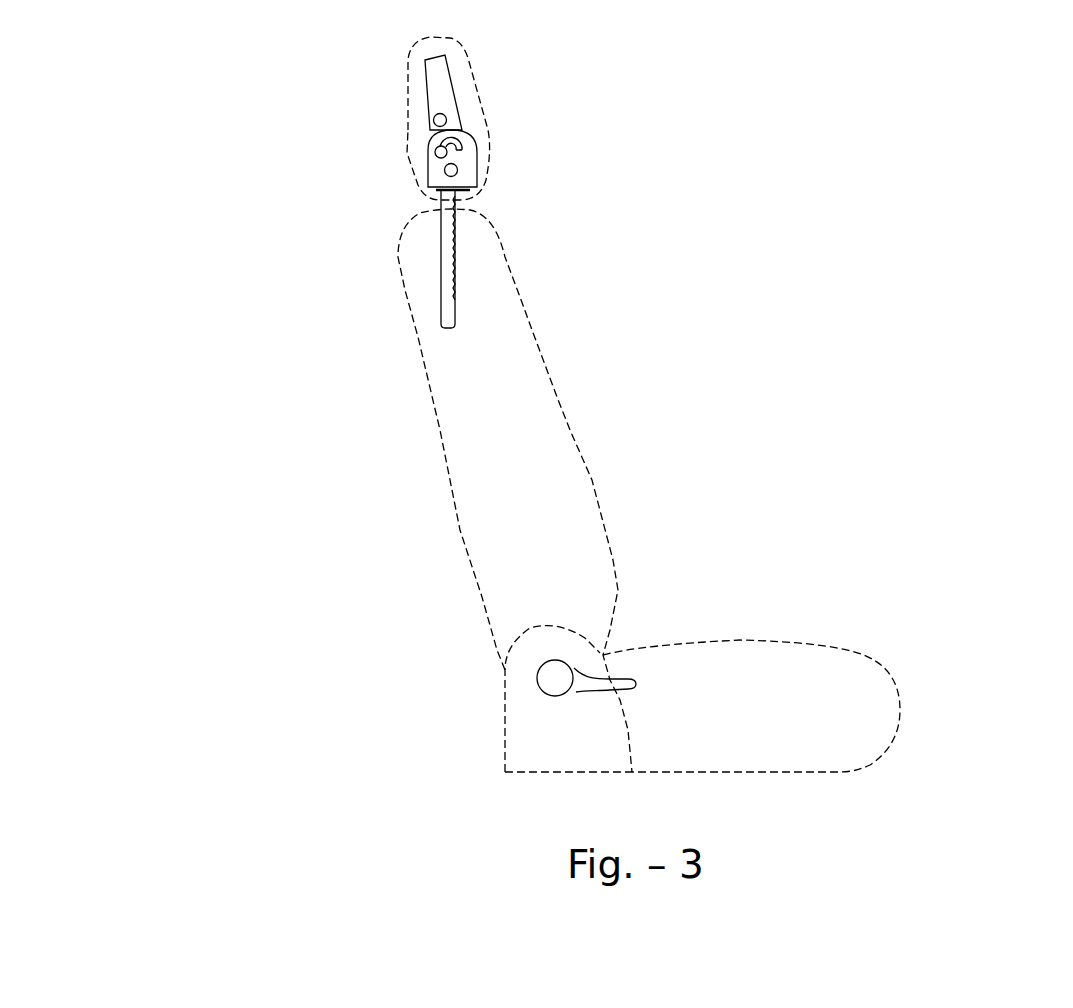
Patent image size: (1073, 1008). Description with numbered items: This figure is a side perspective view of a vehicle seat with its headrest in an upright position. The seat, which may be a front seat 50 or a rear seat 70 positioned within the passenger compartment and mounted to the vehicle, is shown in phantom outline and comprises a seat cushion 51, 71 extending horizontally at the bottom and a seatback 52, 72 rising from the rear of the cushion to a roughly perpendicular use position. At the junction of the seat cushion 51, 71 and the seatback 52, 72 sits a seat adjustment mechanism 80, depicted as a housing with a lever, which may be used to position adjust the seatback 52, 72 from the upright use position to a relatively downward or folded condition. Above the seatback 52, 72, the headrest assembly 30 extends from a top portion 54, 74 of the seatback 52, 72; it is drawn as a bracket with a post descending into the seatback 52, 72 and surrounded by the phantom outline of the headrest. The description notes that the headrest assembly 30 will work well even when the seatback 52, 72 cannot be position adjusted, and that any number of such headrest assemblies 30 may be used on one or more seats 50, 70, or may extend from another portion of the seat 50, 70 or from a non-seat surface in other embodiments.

The front seat 50 is at (567, 431).
The rear seat 70 is at (158, 122).
The headrest assembly 30 is at (490, 108).
The top portion 54 is at (590, 182).
The top portion 74 is at (502, 218).
The seatback 52 is at (614, 490).
The seatback 72 is at (532, 412).
The seat cushion 51 is at (836, 695).
The seat cushion 71 is at (850, 687).
The seat adjustment mechanism 80 is at (505, 745).